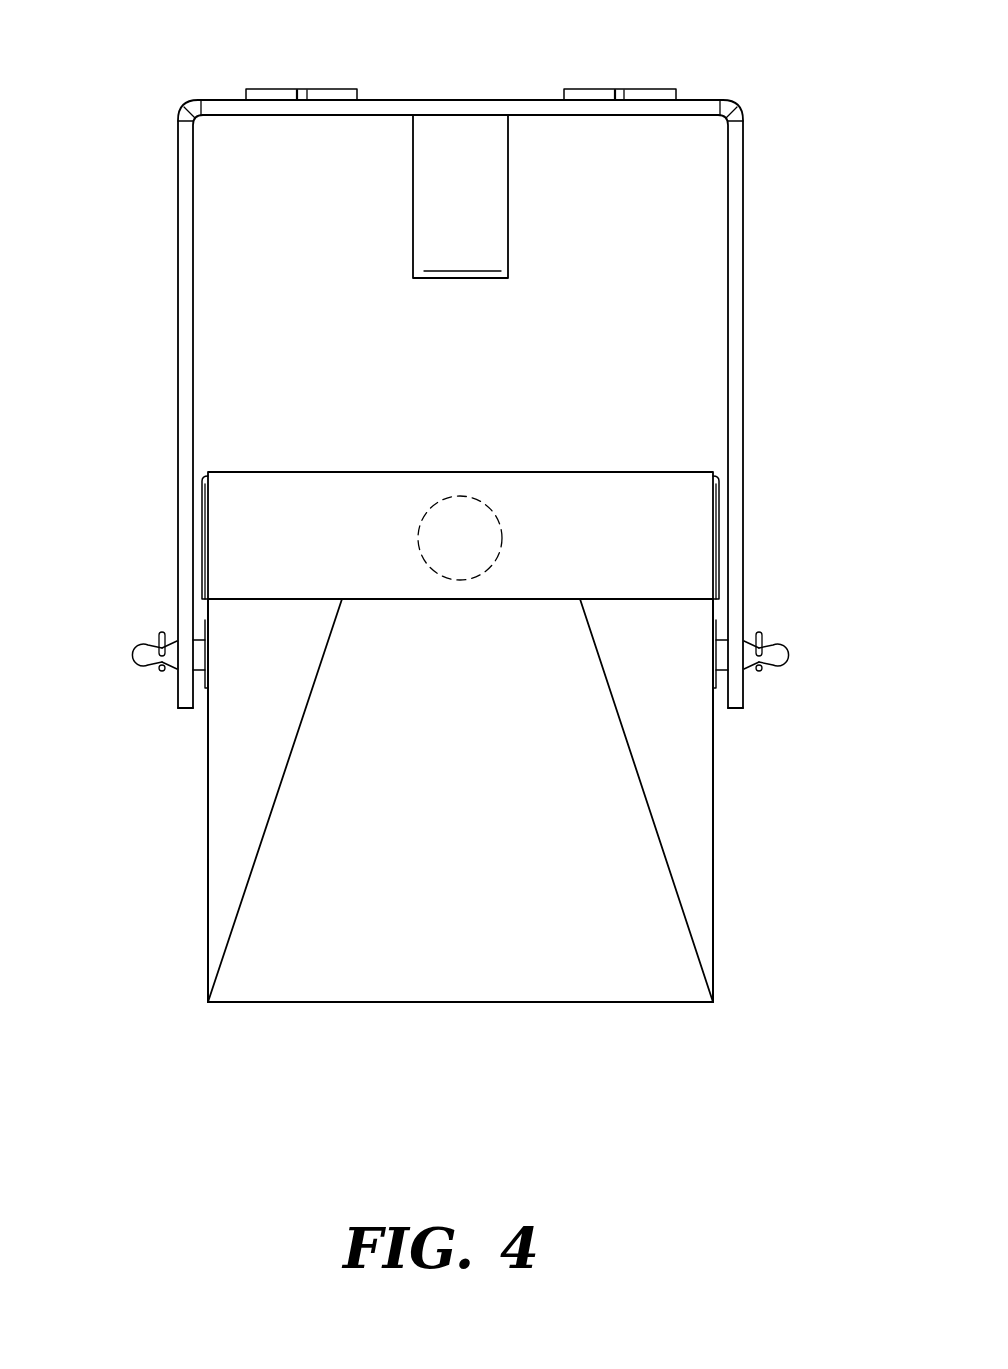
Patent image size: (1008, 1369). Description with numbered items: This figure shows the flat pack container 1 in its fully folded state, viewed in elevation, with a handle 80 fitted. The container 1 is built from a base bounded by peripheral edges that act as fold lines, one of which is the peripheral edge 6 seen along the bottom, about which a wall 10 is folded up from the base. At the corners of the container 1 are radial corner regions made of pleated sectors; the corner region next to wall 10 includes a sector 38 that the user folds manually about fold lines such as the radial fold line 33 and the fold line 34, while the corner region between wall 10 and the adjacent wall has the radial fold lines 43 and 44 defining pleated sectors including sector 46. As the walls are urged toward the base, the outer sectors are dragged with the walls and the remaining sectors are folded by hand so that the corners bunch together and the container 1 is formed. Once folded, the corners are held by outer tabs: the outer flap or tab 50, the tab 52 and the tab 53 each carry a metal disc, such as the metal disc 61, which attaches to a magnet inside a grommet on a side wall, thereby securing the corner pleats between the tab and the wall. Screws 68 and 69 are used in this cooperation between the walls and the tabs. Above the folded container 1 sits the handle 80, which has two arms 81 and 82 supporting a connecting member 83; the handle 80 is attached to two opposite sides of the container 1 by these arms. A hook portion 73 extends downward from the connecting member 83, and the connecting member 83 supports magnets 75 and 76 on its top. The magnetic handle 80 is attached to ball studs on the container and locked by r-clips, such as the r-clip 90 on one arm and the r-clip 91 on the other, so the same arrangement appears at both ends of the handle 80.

The flat pack container 1 is at (180, 1117).
The peripheral edge 6 is at (460, 1003).
The wall 10 is at (462, 847).
The radial fold line 33 is at (713, 878).
The fold line 34 is at (658, 840).
The sector 38 is at (692, 774).
The radial fold line 43 is at (208, 878).
The radial fold line 44 is at (262, 840).
The sector 46 is at (230, 774).
The outer flap/tab 50 is at (206, 518).
The outer flap/tab 52 is at (713, 508).
The outer flap/tab 53 is at (633, 545).
The metal disc 61 is at (478, 498).
The screw 68 is at (793, 656).
The screw 69 is at (128, 656).
The hook portion 73 is at (413, 197).
The magnet 75 is at (336, 89).
The magnet 76 is at (647, 89).
The handle 80 is at (158, 52).
The arm 81 is at (178, 255).
The arm 82 is at (728, 226).
The connecting member 83 is at (507, 100).
The r-clip 90 is at (163, 632).
The right wing nut 91 is at (758, 632).